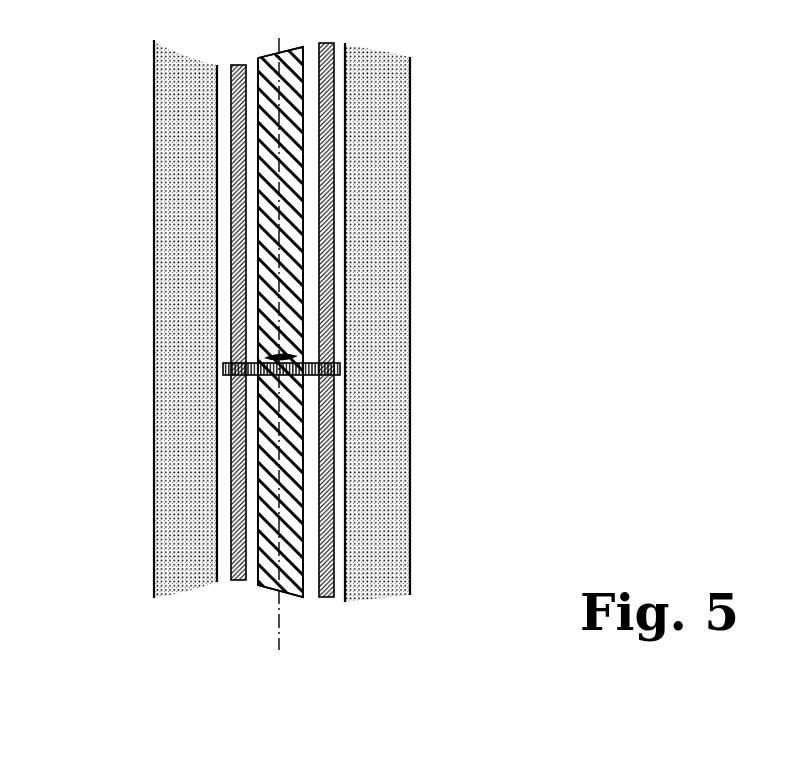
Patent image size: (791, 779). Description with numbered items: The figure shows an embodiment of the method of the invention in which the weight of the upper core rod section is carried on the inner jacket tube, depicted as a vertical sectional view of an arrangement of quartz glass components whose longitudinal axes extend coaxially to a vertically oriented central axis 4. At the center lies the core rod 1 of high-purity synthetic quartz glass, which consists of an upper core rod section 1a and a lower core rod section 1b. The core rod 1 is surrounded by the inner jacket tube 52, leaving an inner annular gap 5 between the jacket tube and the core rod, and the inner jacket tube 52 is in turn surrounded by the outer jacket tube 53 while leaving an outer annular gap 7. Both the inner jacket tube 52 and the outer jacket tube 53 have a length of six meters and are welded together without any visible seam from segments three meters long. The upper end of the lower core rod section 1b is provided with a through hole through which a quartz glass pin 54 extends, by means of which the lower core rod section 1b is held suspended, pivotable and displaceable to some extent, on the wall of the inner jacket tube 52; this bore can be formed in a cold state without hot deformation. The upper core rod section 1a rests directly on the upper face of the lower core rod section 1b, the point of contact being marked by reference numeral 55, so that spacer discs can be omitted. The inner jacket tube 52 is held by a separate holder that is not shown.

The core rod 1 is at (261, 136).
The upper core rod section 1a is at (280, 155).
The lower core rod section 1b is at (282, 483).
The central axis 4 is at (279, 15).
The inner annular gap 5 is at (257, 416).
The outer annular gap 7 is at (229, 490).
The inner jacket tube 52 is at (328, 212).
The outer jacket tube 53 is at (373, 250).
The quartz glass pin 54 is at (223, 375).
The point of contact 55 is at (290, 358).